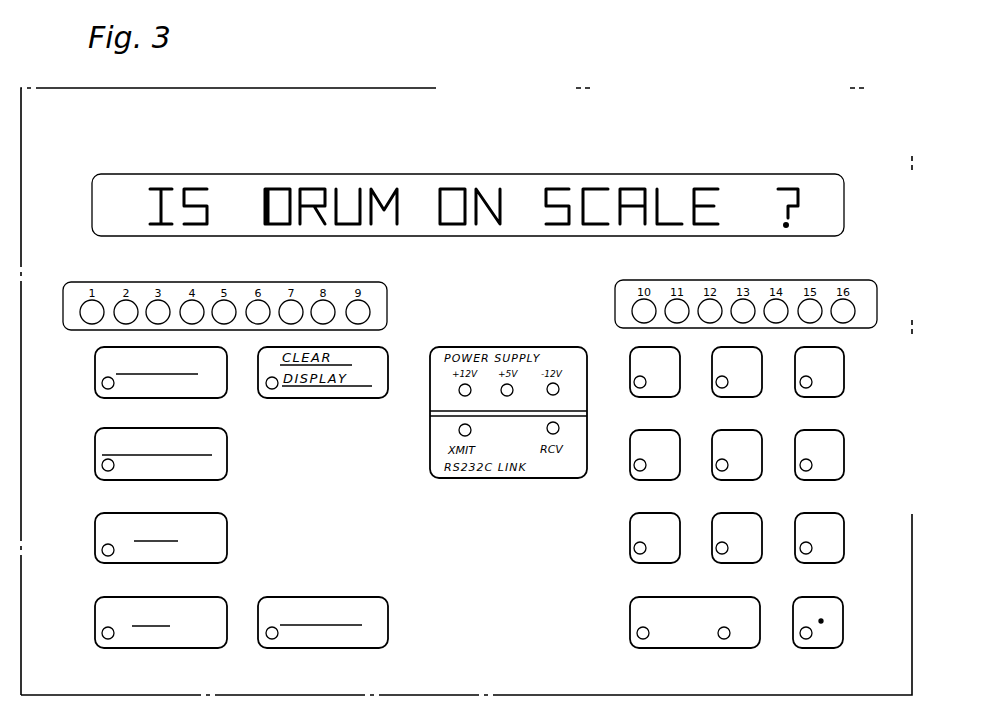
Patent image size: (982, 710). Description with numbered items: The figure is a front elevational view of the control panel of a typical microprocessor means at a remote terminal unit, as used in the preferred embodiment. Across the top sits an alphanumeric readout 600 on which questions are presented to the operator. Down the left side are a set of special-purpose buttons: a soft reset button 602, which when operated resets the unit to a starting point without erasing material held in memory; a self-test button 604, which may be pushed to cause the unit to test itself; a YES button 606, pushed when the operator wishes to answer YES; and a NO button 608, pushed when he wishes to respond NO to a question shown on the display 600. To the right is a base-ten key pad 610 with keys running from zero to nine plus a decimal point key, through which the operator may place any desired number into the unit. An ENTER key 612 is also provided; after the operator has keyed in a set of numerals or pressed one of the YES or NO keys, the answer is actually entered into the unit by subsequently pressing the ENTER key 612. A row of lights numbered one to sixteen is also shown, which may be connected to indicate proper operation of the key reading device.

The alphanumeric readout 600 is at (428, 183).
The soft reset button 602 is at (164, 392).
The self-test button 604 is at (184, 474).
The YES button 606 is at (190, 557).
The NO button 608 is at (182, 641).
The base-10 key pad 610 is at (640, 499).
The ENTER key 612 is at (336, 641).